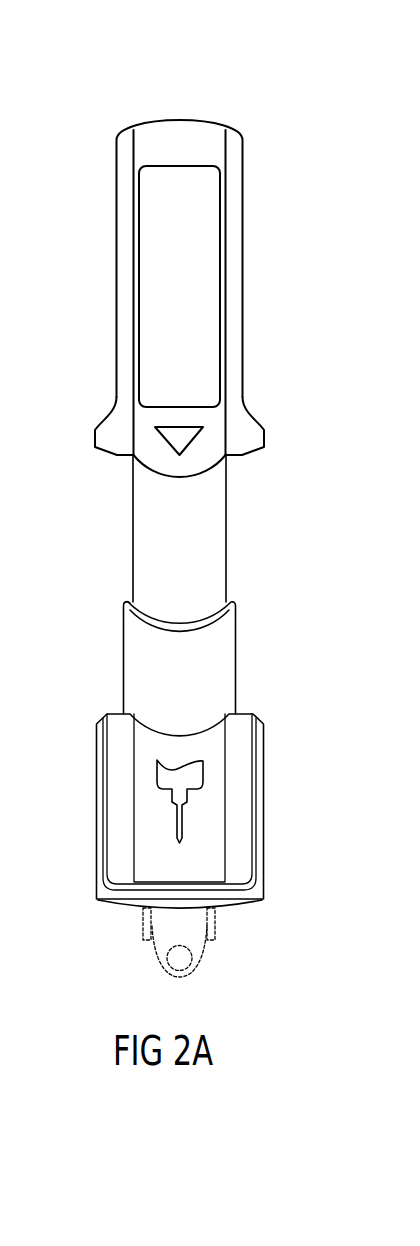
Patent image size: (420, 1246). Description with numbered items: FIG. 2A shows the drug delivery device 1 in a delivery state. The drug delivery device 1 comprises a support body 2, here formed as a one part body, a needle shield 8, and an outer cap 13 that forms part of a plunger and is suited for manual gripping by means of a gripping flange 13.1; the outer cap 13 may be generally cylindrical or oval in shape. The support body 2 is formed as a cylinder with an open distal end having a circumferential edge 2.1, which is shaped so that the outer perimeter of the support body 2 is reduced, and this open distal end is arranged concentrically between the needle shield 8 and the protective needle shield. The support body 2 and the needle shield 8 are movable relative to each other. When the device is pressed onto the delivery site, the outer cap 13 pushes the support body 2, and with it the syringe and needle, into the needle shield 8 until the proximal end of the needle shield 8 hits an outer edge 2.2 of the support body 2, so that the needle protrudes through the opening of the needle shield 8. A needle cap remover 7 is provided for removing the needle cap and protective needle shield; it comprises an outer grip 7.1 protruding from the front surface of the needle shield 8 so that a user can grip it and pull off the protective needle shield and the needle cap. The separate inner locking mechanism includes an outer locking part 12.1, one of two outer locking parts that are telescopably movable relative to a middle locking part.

The drug delivery device 1 is at (121, 90).
The support body 2 is at (206, 522).
The circumferential edge 2.1 is at (233, 608).
The outer edge 2.2 is at (131, 599).
The needle cap remover 7 is at (167, 928).
The outer grip 7.1 is at (197, 958).
The needle shield 8 is at (243, 792).
The locking part 12.1 is at (217, 920).
The outer cap 13 is at (222, 273).
The gripping flange 13.1 is at (253, 438).